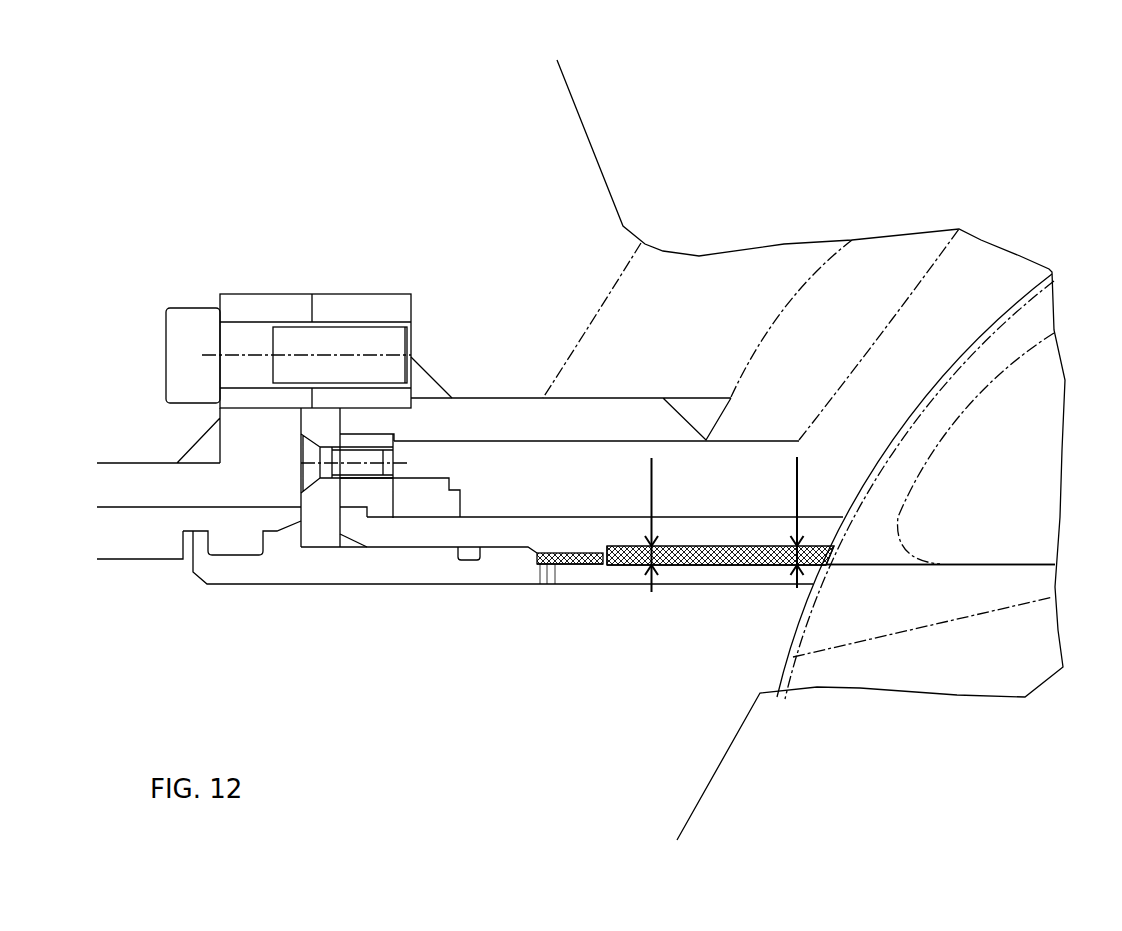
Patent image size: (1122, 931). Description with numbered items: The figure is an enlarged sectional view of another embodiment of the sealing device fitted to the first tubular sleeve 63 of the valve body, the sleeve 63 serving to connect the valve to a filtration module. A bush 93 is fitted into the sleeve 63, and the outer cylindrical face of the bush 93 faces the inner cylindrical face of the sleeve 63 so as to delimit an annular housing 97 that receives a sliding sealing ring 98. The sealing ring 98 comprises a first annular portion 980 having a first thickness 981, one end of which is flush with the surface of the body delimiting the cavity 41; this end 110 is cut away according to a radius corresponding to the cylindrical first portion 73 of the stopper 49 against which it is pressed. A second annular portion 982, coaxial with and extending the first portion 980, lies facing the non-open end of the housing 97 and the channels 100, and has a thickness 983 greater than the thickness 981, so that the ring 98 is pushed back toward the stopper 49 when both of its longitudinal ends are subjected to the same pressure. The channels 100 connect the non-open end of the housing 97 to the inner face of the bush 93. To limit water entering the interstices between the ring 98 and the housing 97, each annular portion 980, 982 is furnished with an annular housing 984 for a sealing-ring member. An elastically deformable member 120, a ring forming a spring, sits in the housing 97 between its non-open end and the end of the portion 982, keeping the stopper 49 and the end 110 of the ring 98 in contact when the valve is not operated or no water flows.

The first tubular sleeve 63 is at (518, 417).
The housing 97 is at (557, 547).
The channels 100 is at (546, 580).
The elastically deformable member 120 is at (573, 564).
The sealing ring 98 is at (707, 567).
The second annular portion 982 is at (627, 563).
The annular housing 984 is at (682, 565).
The first annular portion 980 is at (770, 565).
The thickness 983 is at (653, 488).
The first thickness 981 is at (798, 488).
The cavity 41 is at (940, 383).
The end of the sealing ring 110 is at (835, 557).
The first portion of the stopper 73 is at (958, 604).
The stopper 49 is at (940, 585).
The bush 93 is at (300, 562).